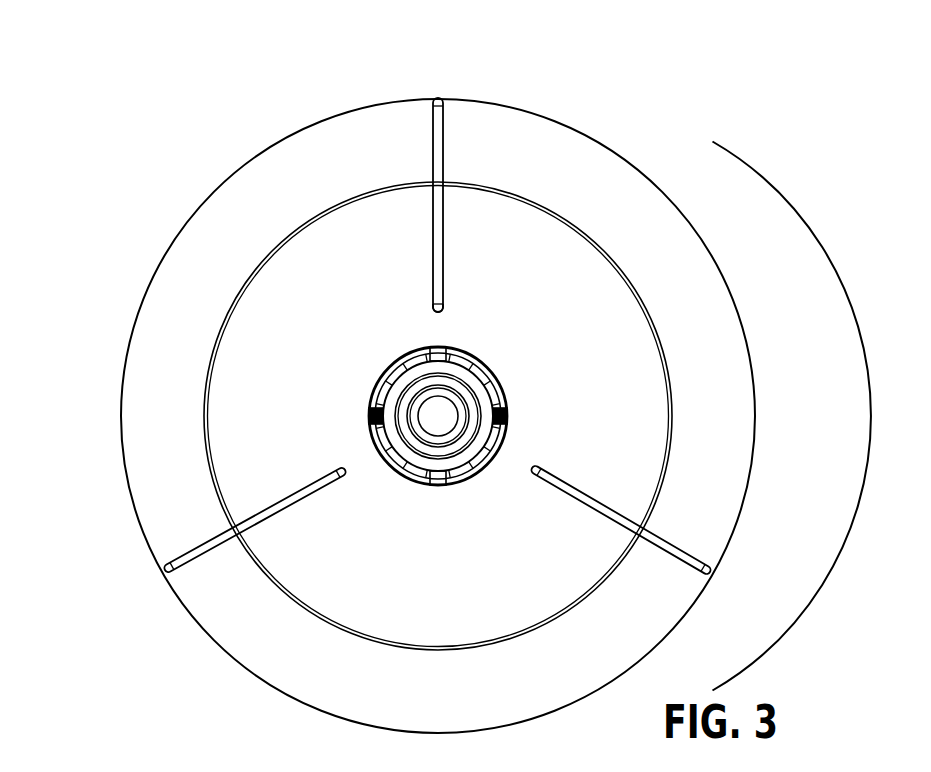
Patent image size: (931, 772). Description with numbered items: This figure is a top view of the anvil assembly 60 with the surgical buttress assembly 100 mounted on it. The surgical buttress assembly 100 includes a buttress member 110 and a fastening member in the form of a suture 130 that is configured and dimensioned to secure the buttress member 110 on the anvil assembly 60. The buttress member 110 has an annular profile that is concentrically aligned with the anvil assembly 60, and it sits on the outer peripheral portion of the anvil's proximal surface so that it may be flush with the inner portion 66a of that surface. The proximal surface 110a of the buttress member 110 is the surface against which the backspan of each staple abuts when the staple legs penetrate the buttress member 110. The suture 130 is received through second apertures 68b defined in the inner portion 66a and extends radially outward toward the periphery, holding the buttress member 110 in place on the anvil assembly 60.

The anvil assembly 60 is at (108, 517).
The inner portion of the proximal surface 66a is at (248, 352).
The second aperture 68b is at (443, 307).
The surgical buttress assembly 100 is at (451, 84).
The buttress member 110 is at (698, 347).
The proximal surface of the buttress member 110a is at (710, 410).
The suture 130 is at (198, 558).